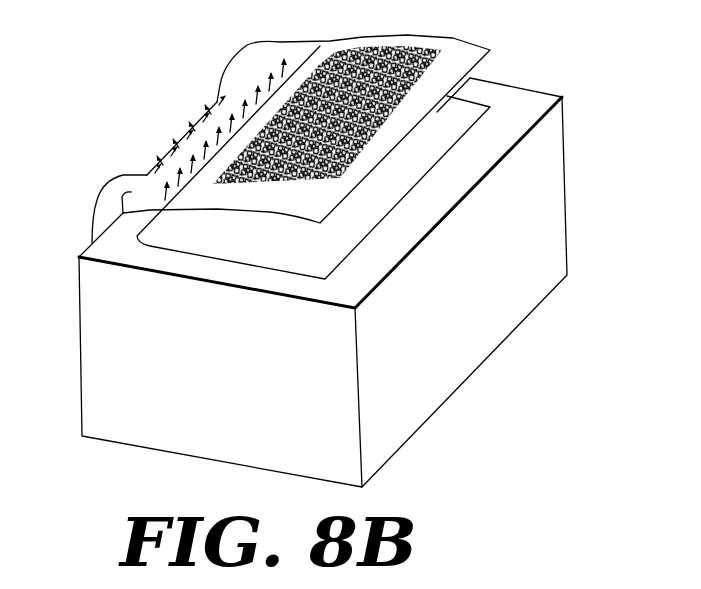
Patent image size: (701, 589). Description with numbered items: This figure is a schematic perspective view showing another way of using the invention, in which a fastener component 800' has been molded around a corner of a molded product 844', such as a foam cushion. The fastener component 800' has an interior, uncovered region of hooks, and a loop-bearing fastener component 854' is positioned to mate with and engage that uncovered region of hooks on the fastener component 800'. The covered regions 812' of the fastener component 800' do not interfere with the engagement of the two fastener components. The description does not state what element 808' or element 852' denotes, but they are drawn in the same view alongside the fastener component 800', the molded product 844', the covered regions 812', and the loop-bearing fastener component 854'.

The fastener component 800' is at (323, 248).
The emission arrows / active strip 808' is at (183, 129).
The covered regions 812' is at (93, 209).
The molded product 844' is at (359, 162).
The lifted cover sheet 852' is at (312, 116).
The loop-bearing fastener component 854' is at (327, 144).